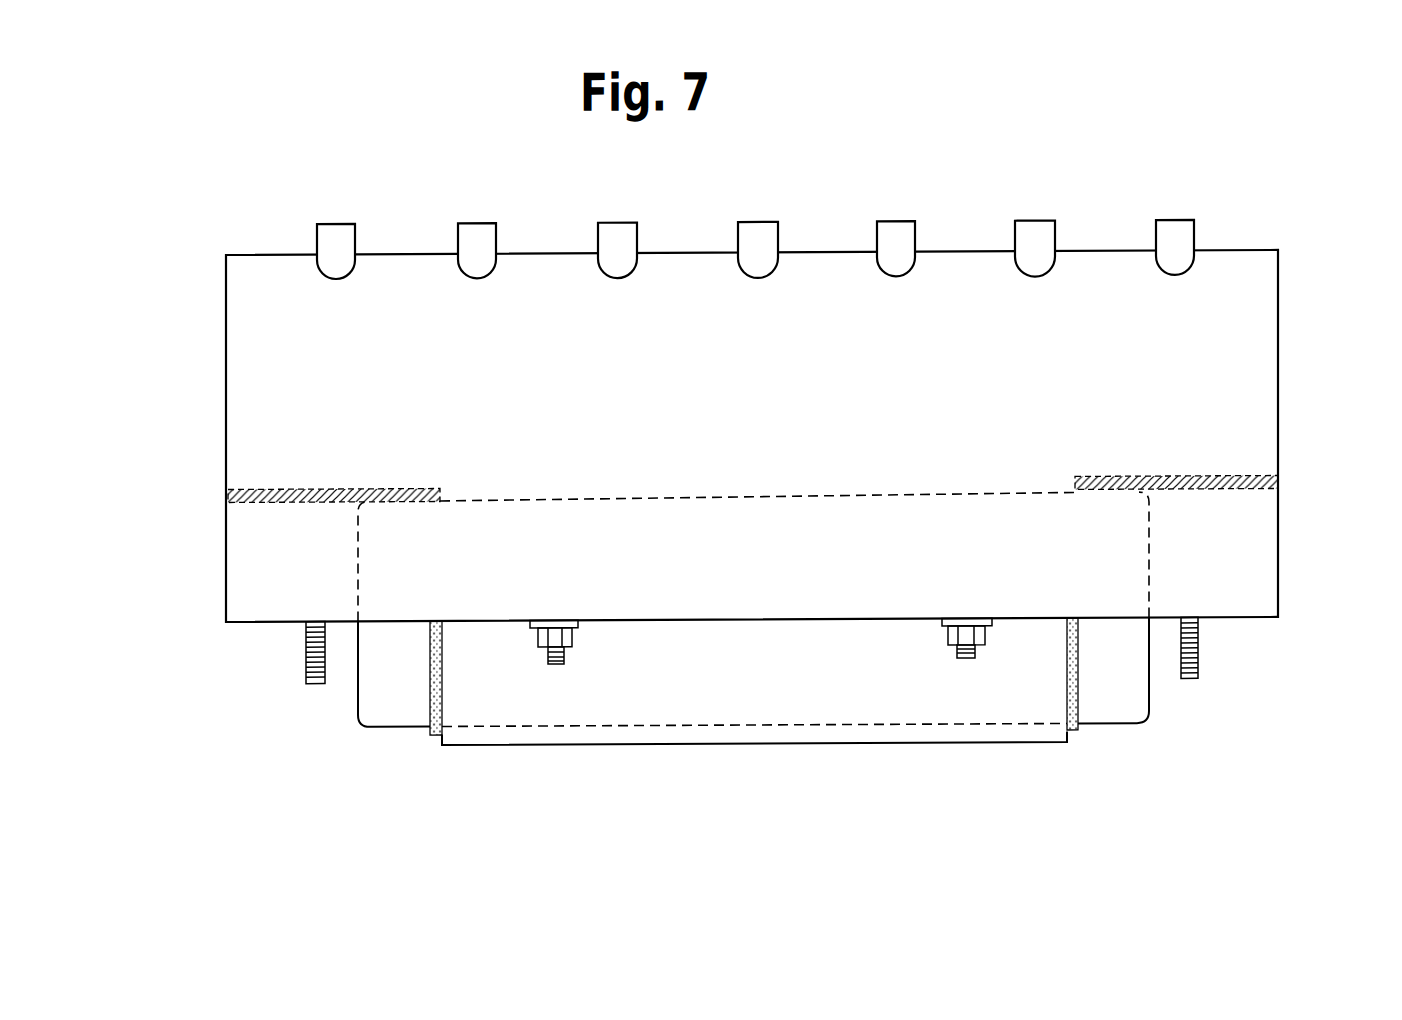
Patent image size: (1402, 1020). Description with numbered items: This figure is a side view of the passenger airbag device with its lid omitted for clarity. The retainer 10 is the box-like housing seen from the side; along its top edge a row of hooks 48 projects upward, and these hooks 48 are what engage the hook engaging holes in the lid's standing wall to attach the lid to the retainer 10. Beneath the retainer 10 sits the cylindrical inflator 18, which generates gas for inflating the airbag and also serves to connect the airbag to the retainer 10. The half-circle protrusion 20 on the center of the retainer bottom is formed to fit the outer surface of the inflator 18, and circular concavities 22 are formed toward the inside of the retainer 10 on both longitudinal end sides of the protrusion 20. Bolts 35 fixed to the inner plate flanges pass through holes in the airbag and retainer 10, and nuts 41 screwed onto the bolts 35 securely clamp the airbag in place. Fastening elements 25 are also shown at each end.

The retainer 10 is at (812, 293).
The hooks 48 is at (478, 238).
The concavities 22 is at (265, 494).
The cylindrical inflator 18 is at (386, 713).
The protrusion 20 is at (582, 705).
The bolts 25 is at (306, 668).
The nuts 41 is at (572, 636).
The bolts 35 is at (550, 661).